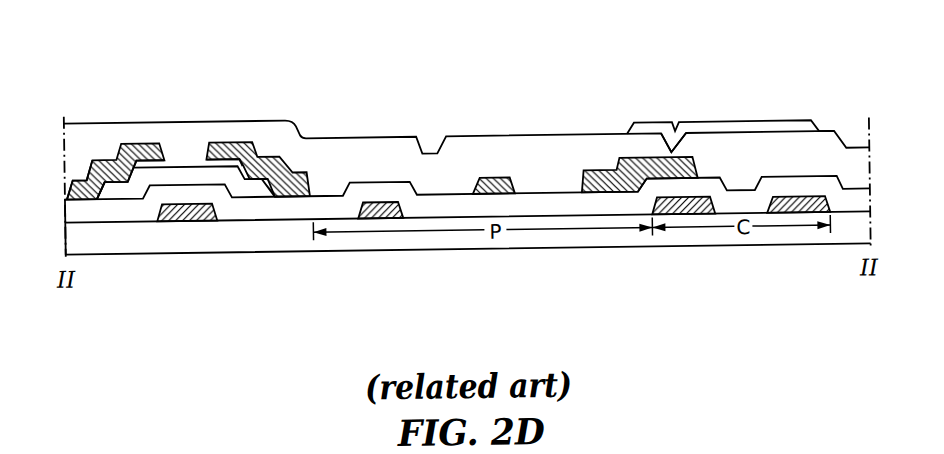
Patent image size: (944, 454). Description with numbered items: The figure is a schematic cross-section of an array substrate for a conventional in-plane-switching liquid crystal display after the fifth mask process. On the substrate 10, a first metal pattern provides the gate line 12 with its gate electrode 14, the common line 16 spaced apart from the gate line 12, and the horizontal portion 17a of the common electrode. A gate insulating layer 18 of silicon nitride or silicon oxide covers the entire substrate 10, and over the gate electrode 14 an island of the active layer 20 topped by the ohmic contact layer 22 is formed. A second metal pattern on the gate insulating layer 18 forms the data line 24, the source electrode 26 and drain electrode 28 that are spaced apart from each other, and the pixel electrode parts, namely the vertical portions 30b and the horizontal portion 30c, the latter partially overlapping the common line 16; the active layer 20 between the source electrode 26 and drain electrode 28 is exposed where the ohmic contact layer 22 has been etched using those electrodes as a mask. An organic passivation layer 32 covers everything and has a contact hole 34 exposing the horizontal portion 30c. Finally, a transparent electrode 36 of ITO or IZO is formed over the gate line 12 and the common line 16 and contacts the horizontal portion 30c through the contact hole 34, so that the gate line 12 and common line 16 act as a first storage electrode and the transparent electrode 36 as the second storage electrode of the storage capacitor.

The substrate 10 is at (245, 241).
The gate line 12 is at (797, 218).
The gate electrode 14 is at (183, 215).
The common line 16 is at (683, 215).
The horizontal portion 17a is at (378, 199).
The gate insulating layer 18 is at (445, 201).
The active layer 20 is at (183, 162).
The ohmic contact layer 22 is at (263, 137).
The data line 24 is at (82, 171).
The source electrode 26 is at (157, 140).
The drain electrode 28 is at (232, 138).
The vertical portions 30b is at (498, 178).
The horizontal portion 30c is at (600, 172).
The passivation layer 32 is at (328, 150).
The contact hole 34 is at (674, 145).
The transparent electrode 36 is at (735, 129).